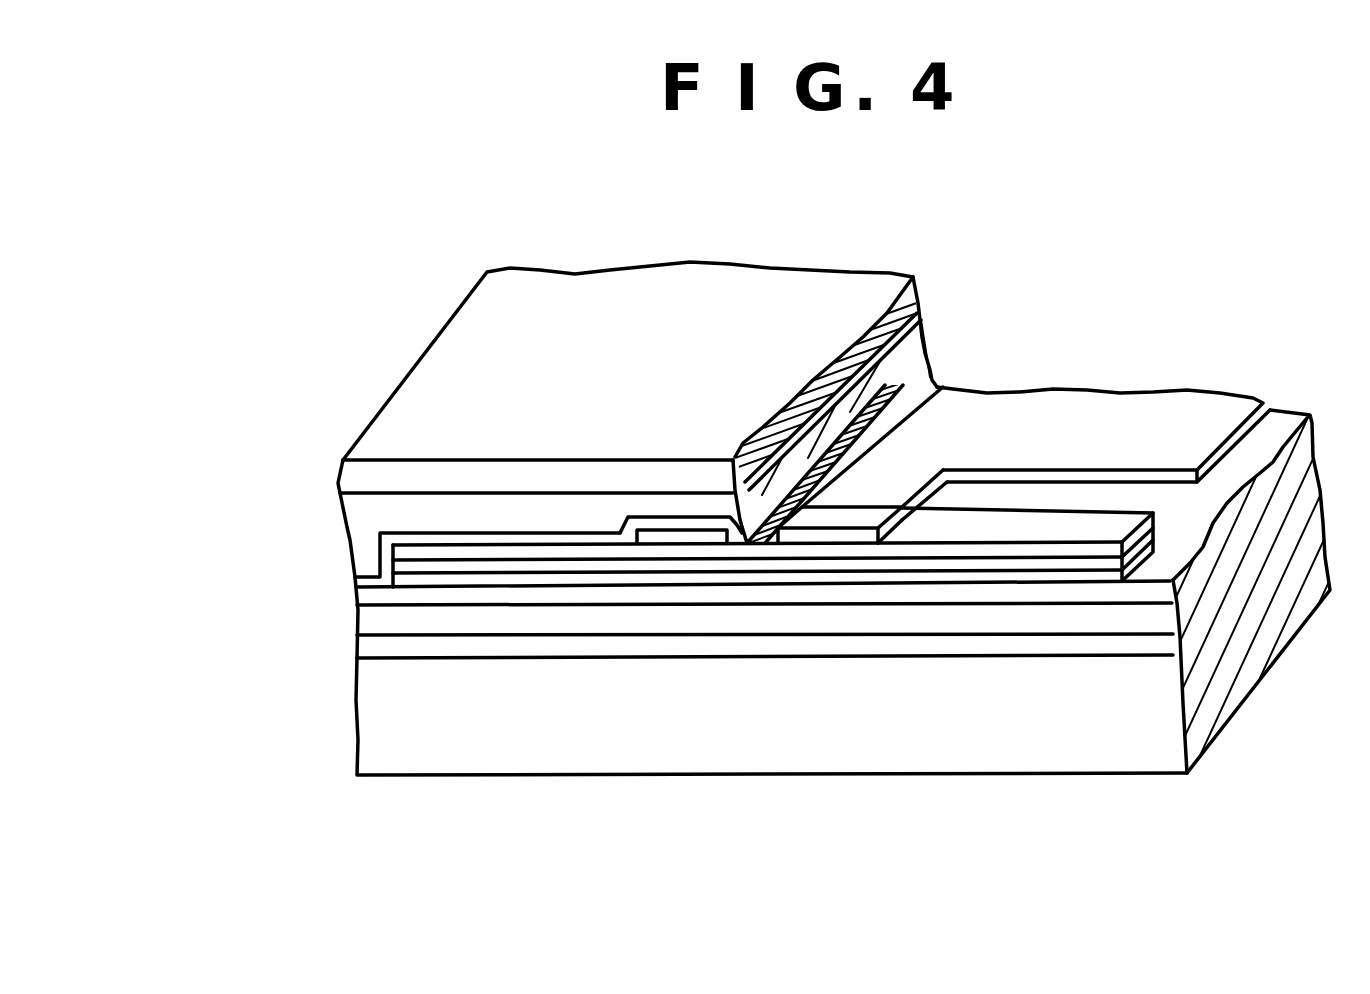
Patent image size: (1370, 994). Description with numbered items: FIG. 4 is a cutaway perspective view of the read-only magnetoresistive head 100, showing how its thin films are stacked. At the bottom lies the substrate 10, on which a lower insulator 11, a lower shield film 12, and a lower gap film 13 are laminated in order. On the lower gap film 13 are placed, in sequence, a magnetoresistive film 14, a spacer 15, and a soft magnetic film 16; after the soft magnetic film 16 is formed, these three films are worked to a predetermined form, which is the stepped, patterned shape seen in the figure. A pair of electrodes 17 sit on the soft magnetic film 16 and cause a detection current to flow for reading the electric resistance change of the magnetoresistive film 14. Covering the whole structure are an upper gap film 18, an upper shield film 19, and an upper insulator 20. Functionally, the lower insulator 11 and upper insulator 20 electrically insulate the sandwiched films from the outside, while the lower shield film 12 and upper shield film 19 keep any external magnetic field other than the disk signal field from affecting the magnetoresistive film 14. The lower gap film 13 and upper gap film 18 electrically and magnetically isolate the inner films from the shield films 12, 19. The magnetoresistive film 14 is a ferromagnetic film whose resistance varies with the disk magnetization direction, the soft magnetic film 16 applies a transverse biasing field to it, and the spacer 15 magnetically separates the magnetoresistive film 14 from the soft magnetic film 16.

The magnetoresistive head 100 is at (953, 238).
The substrate 10 is at (763, 742).
The lower insulator 11 is at (893, 657).
The lower shield film 12 is at (948, 620).
The lower gap film 13 is at (990, 592).
The magnetoresistive film 14 is at (1020, 577).
The spacer 15 is at (1050, 563).
The soft magnetic film 16 is at (1080, 550).
The electrodes 17 is at (700, 537).
The upper gap film 18 is at (660, 520).
The upper shield film 19 is at (360, 522).
The upper insulator 20 is at (560, 473).